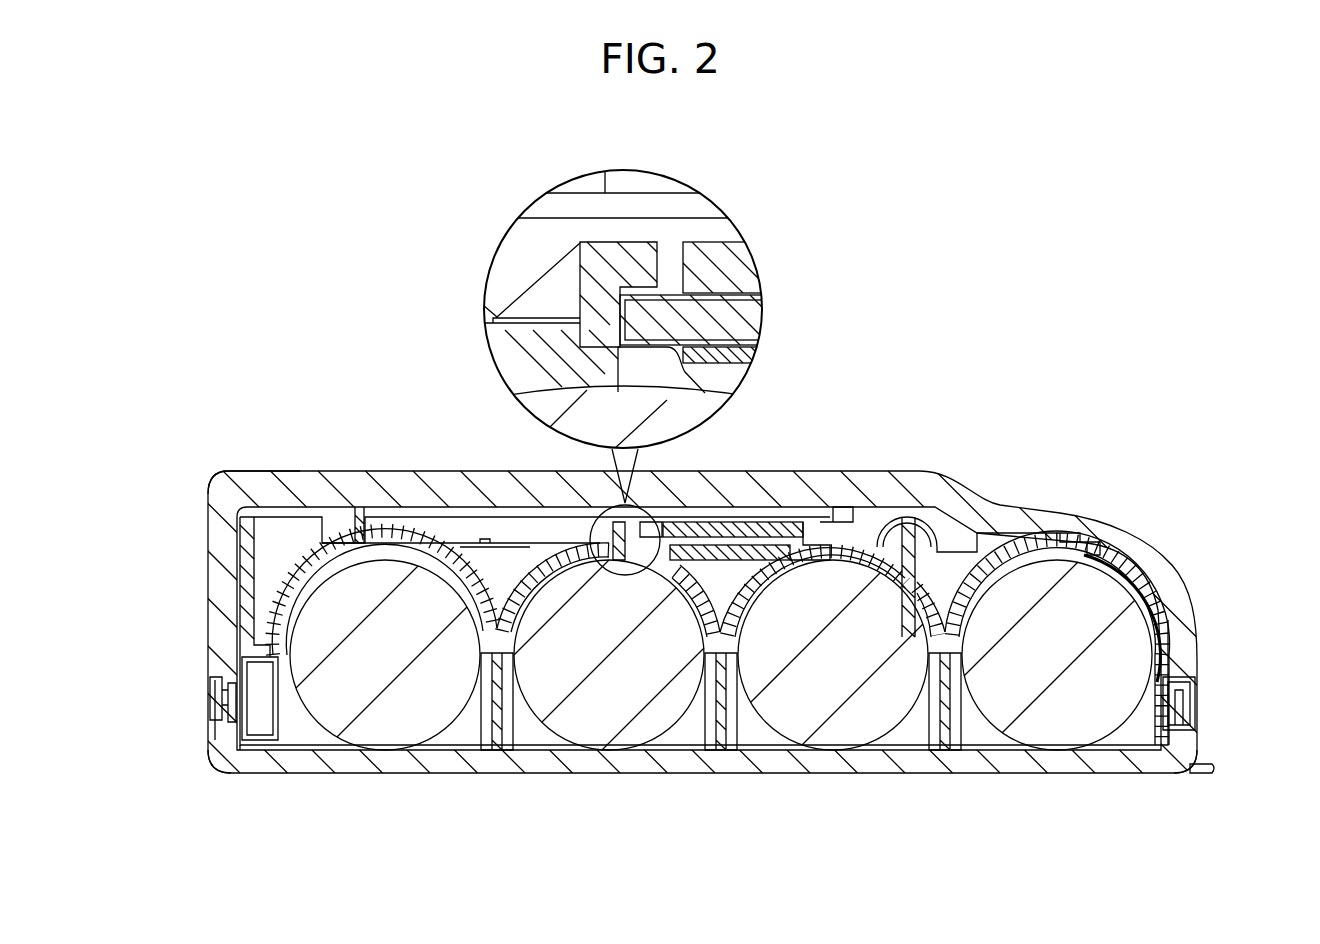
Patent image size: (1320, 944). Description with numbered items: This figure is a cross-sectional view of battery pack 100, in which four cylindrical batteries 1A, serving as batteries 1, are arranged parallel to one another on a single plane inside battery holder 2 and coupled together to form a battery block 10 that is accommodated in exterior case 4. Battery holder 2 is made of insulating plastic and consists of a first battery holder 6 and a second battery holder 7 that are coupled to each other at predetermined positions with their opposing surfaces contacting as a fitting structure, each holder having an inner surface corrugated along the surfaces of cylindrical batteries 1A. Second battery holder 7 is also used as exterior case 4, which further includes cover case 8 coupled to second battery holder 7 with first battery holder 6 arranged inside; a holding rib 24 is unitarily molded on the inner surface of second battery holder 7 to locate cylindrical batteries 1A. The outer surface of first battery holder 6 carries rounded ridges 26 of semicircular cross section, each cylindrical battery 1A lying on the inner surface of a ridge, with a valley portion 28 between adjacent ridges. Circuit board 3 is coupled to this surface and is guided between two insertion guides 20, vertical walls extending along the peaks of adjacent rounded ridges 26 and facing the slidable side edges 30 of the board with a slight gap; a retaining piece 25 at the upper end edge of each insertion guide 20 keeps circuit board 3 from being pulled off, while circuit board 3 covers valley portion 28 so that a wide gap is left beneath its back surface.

The battery pack 100 is at (1084, 349).
The battery 1 is at (630, 407).
The cylindrical battery 1A is at (347, 670).
The battery holder 2 is at (1271, 527).
The circuit board 3 is at (733, 537).
The exterior case 4 is at (150, 413).
The first battery holder 6 is at (1043, 587).
The second battery holder 7 is at (303, 762).
The cover case 8 is at (303, 485).
The battery block 10 is at (333, 516).
The insertion guide 20 is at (870, 533).
The holding rib 24 is at (467, 737).
The retaining piece 25 is at (663, 492).
The rounded ridge 26 is at (545, 565).
The valley portion 28 is at (701, 594).
The slidable side edge 30 is at (605, 312).